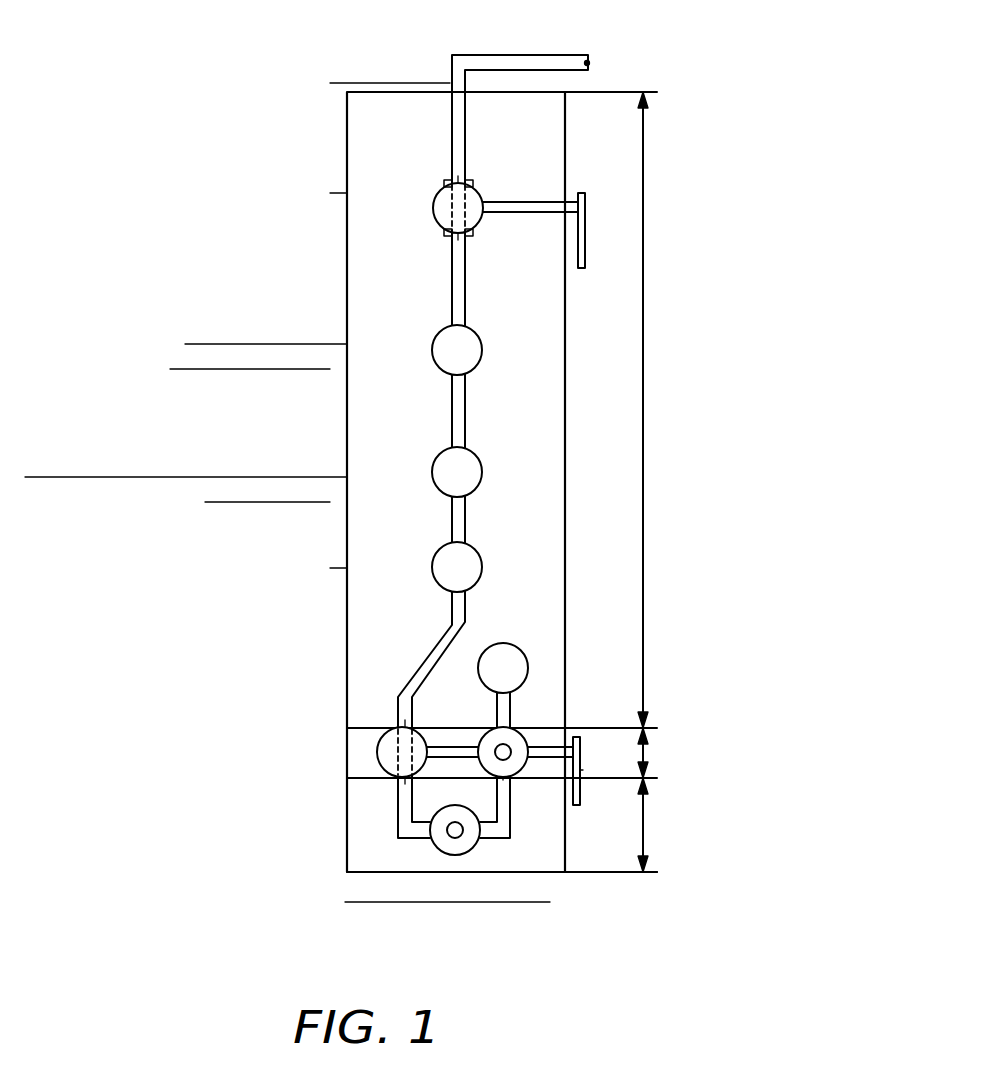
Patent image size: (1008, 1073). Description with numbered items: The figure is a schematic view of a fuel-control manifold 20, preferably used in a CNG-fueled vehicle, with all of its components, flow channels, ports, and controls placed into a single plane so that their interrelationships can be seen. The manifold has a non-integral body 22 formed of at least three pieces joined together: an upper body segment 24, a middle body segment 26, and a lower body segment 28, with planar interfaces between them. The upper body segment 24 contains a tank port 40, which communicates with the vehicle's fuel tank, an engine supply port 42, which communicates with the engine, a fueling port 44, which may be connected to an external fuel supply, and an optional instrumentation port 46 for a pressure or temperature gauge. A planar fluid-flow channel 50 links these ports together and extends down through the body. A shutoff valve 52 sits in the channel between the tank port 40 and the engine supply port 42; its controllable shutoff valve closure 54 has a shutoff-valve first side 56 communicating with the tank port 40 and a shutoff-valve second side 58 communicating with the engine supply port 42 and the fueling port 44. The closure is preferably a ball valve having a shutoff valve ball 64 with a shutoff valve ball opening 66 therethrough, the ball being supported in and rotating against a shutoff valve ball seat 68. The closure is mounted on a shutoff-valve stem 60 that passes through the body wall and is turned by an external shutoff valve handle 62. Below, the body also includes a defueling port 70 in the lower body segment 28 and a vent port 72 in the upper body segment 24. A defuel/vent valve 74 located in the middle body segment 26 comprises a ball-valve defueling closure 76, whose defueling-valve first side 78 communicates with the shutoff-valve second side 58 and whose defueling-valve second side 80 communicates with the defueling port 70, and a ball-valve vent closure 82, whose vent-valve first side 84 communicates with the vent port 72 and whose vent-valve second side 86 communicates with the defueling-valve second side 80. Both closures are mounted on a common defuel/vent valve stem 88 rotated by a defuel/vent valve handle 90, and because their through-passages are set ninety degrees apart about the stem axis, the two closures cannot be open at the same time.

The fuel-control manifold 20 is at (278, 96).
The non-integral body 22 is at (340, 153).
The upper body segment 24 is at (567, 385).
The middle body segment 26 is at (347, 750).
The lower body segment 28 is at (347, 852).
The tank port 40 is at (446, 88).
The engine supply port 42 is at (440, 332).
The fueling port 44 is at (480, 565).
The instrumentation port 46 is at (482, 478).
The fluid-flow channel 50 is at (466, 124).
The shutoff valve 52 is at (436, 244).
The shutoff valve closure 54 is at (376, 210).
The shutoff-valve first side 56 is at (450, 180).
The shutoff-valve second side 58 is at (468, 236).
The shutoff-valve stem 60 is at (530, 202).
The shutoff valve handle 62 is at (585, 245).
The shutoff valve ball 64 is at (437, 218).
The shutoff valve ball opening 66 is at (468, 218).
The shutoff valve ball seat 68 is at (470, 182).
The defueling port 70 is at (432, 842).
The vent port 72 is at (515, 652).
The defuel/vent valve 74 is at (588, 766).
The ball-valve defueling closure 76 is at (335, 742).
The defueling-valve first side 78 is at (400, 728).
The defueling-valve second side 80 is at (398, 779).
The ball-valve vent closure 82 is at (523, 775).
The vent-valve first side 84 is at (490, 728).
The vent-valve second side 86 is at (490, 778).
The defuel/vent valve stem 88 is at (545, 758).
The defuel/vent valve handle 90 is at (580, 790).